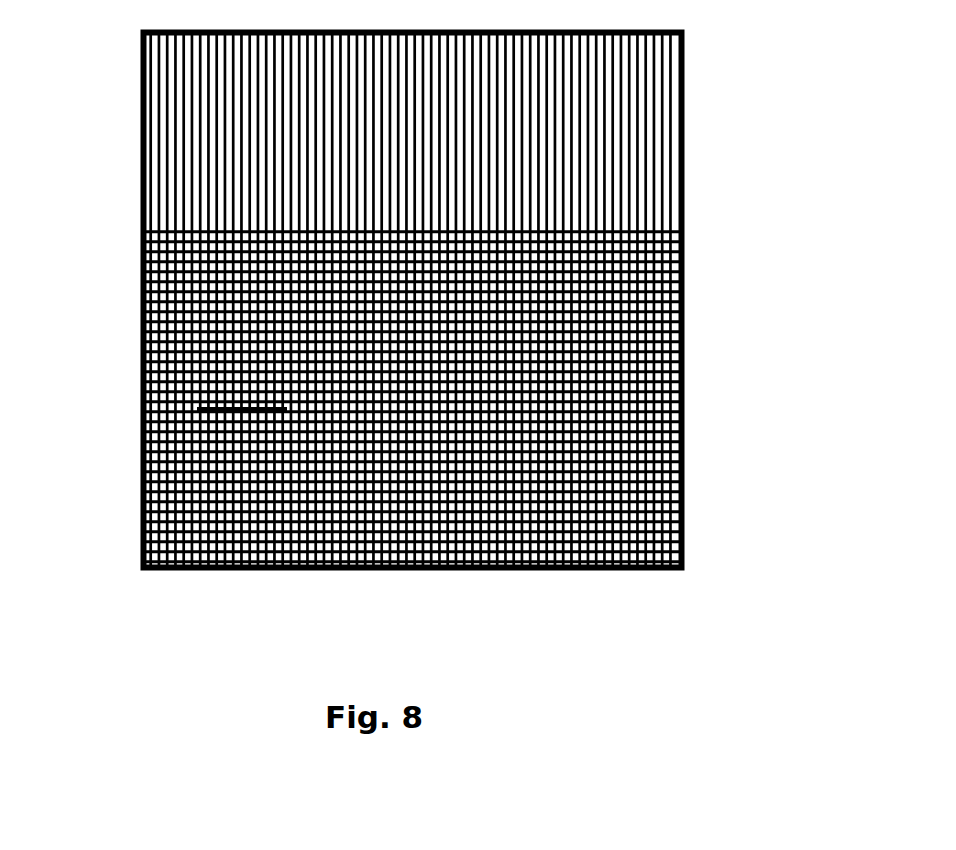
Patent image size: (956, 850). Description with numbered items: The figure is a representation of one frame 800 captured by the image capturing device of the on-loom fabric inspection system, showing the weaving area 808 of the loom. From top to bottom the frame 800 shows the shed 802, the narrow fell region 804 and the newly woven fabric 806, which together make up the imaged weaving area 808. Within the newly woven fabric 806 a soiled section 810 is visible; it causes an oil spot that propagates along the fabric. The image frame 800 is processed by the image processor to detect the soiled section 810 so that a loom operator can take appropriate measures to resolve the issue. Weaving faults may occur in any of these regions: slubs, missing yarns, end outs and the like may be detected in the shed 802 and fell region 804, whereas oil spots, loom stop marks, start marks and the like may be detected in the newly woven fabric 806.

The frame 800 is at (74, 555).
The shed 802 is at (695, 31).
The fell region 804 is at (695, 227).
The newly woven fabric 806 is at (695, 270).
The weaving area 808 is at (770, 32).
The soiled section 810 is at (217, 406).